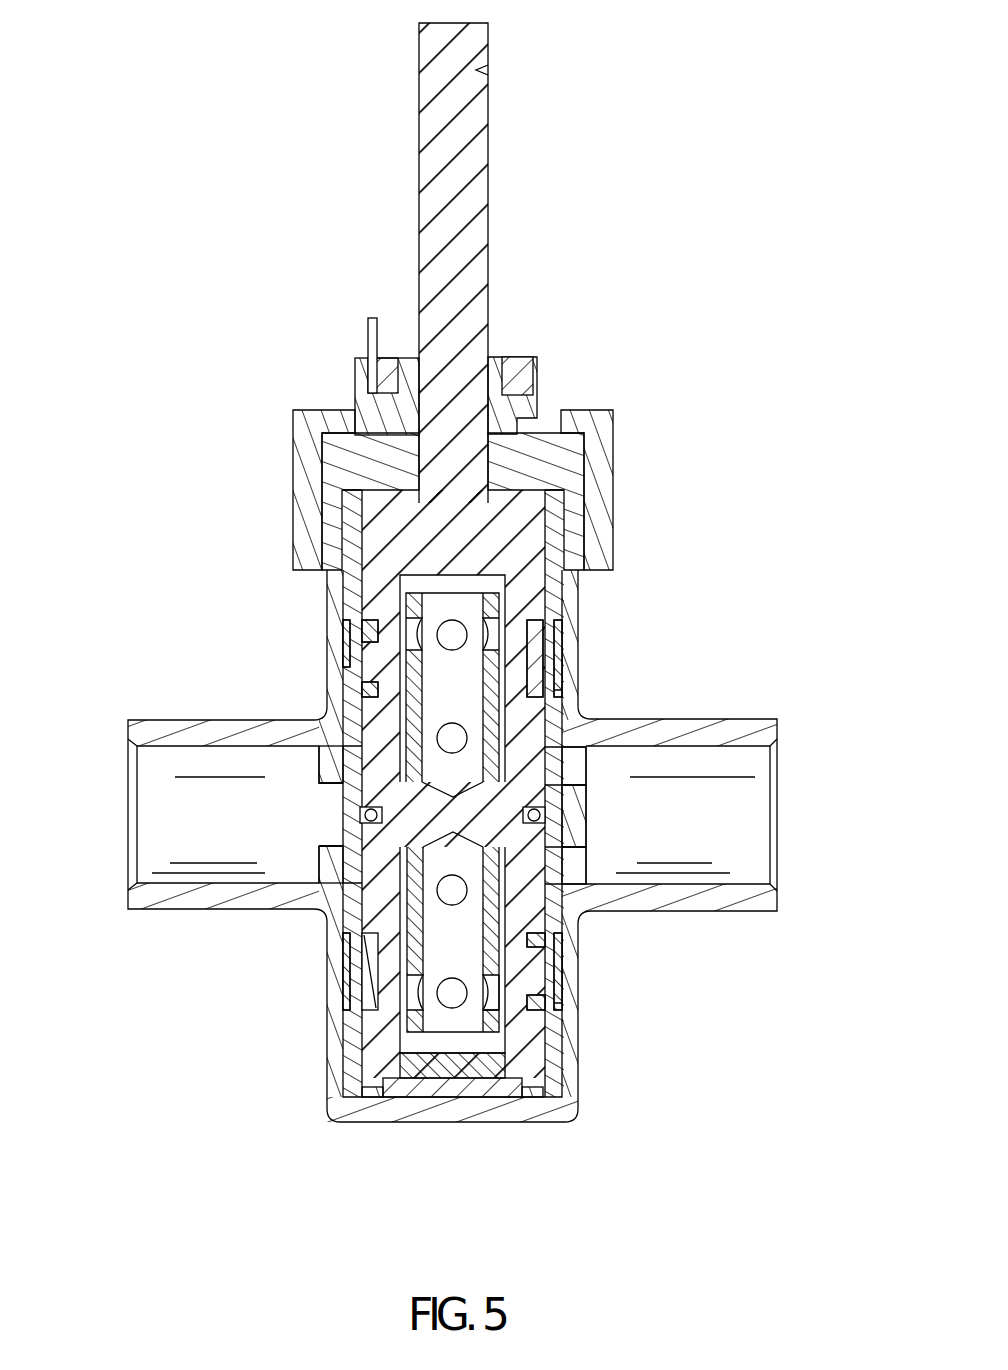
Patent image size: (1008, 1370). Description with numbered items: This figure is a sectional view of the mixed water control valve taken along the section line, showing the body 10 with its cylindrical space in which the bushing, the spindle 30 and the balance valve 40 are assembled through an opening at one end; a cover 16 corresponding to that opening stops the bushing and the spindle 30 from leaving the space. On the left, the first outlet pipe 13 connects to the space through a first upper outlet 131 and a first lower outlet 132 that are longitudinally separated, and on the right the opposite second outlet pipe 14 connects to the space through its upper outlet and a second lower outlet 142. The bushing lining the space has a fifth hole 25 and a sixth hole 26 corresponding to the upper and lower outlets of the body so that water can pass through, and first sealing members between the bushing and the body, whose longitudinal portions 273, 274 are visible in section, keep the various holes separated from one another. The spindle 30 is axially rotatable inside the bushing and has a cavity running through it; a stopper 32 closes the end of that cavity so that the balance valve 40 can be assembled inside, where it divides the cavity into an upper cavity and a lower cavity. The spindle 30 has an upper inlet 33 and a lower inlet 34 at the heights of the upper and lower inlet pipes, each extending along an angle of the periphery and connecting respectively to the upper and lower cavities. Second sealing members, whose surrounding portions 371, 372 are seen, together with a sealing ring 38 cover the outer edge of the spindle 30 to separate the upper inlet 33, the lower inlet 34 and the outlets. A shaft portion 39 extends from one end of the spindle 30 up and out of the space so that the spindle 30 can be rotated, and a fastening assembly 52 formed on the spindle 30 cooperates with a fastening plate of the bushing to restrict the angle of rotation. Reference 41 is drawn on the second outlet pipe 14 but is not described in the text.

The body 10 is at (358, 1108).
The first outlet pipe 13 is at (166, 793).
The first upper outlet 131 is at (330, 775).
The first lower outlet 132 is at (343, 872).
The second outlet pipe 14 is at (740, 850).
The second lower outlet 142 is at (577, 855).
The cover 16 is at (582, 408).
The fifth hole 25 is at (331, 757).
The sixth hole 26 is at (343, 877).
The longitudinal portion 273 is at (343, 628).
The longitudinal portion 274 is at (560, 648).
The spindle 30 is at (500, 477).
The stopper 32 is at (460, 1085).
The upper inlet 33 is at (343, 648).
The lower inlet 34 is at (530, 995).
The surrounding portion 371 is at (558, 622).
The surrounding portion 372 is at (558, 690).
The sealing ring 38 is at (572, 768).
The shaft portion 39 is at (465, 128).
The balance valve 40 is at (400, 917).
The second port upper wall 41 is at (640, 748).
The fastening assembly 52 is at (495, 355).